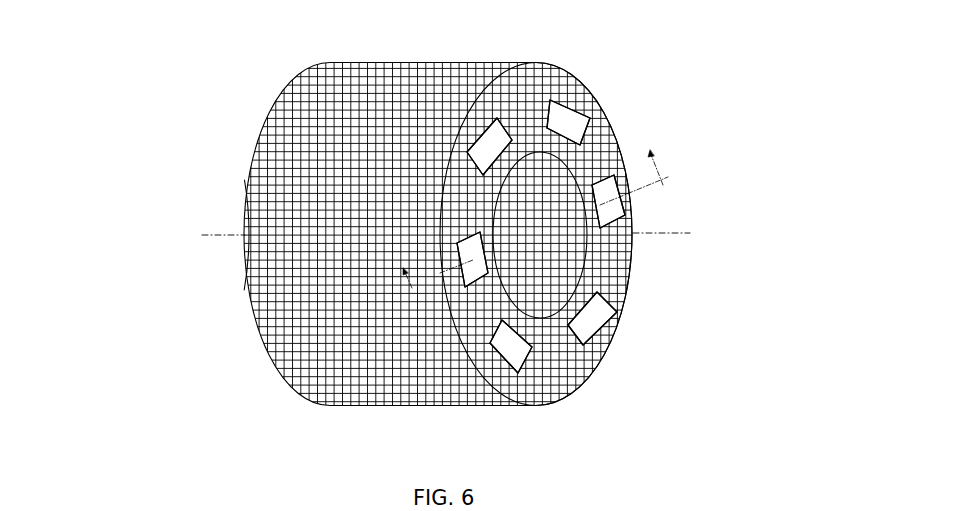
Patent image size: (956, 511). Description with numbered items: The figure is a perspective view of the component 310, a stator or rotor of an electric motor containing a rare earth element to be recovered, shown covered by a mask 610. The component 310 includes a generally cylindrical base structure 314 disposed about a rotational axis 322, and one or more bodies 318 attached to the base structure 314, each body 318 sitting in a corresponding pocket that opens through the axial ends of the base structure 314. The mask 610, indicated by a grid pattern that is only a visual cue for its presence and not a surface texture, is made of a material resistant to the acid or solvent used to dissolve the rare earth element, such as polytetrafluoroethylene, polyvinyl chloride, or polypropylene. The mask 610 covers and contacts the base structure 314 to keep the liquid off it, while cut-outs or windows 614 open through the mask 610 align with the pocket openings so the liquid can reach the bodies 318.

The component 310 is at (505, 344).
The base structure 314 is at (273, 178).
The body 318 is at (488, 152).
The rotational axis 322 is at (218, 232).
The mask 610 is at (328, 152).
The window 614 is at (547, 108).